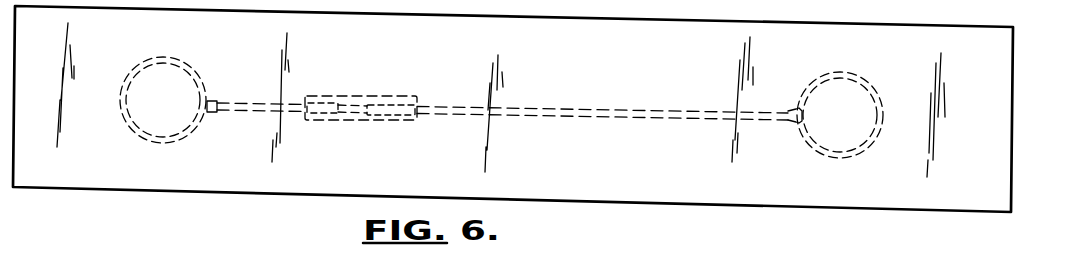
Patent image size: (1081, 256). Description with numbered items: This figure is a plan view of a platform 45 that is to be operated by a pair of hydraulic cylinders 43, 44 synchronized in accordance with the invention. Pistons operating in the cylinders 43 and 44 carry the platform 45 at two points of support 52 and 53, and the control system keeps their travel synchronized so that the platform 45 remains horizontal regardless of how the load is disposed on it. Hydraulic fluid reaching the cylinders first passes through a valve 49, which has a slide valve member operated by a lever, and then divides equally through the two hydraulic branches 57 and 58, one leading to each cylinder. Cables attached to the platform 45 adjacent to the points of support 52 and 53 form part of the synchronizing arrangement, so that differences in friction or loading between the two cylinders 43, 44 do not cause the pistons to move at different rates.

The cylinder 43 is at (195, 73).
The cylinder 44 is at (873, 92).
The platform 45 is at (1000, 159).
The valve 49 is at (357, 97).
The hydraulic branch 57 is at (233, 103).
The hydraulic branch 58 is at (590, 110).
The point of support 52 is at (192, 245).
The point of support 53 is at (865, 251).